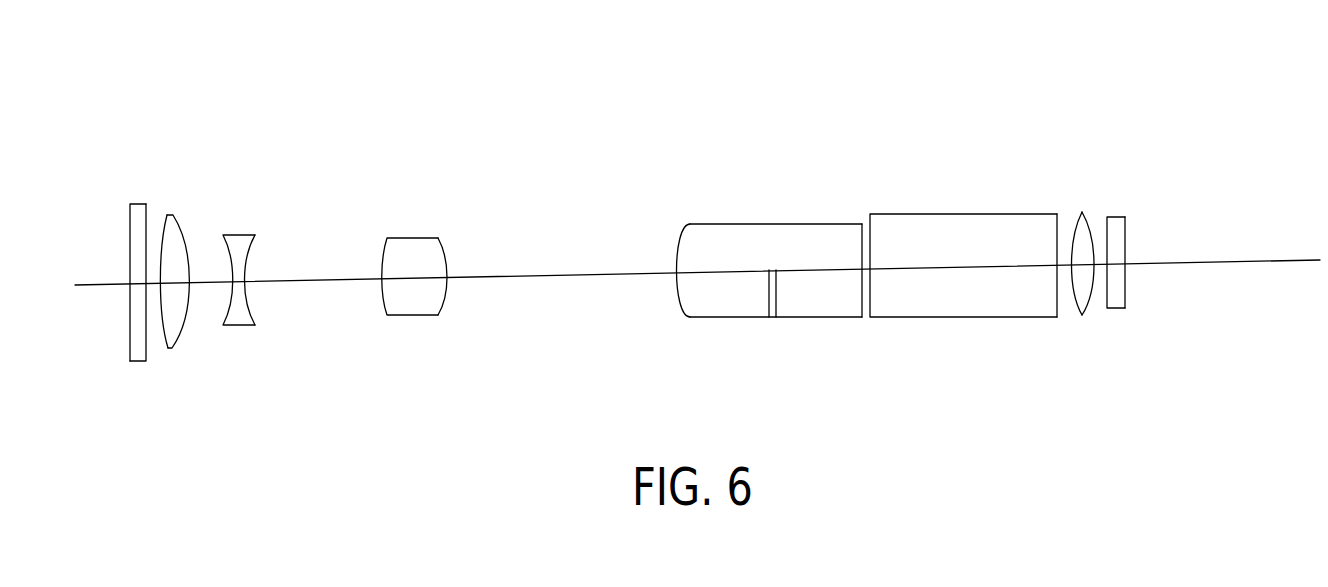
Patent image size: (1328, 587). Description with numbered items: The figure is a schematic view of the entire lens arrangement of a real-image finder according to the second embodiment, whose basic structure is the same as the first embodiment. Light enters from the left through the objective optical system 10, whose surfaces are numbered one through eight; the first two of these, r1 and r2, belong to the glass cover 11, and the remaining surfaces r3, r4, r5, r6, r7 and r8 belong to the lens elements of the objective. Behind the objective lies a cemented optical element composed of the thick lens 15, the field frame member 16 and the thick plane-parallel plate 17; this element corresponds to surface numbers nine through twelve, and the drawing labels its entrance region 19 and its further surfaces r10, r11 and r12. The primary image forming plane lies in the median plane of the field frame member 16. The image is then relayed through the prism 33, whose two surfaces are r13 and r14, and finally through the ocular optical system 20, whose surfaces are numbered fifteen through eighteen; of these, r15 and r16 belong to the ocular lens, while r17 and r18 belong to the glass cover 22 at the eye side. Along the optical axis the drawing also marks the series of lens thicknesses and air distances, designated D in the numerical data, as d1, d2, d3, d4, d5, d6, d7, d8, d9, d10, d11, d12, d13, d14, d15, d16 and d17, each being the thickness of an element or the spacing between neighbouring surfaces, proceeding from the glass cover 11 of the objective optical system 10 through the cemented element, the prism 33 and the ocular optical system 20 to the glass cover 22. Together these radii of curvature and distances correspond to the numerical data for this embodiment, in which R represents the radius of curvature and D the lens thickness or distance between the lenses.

The objective optical system 10 is at (440, 62).
The glass cover 11 is at (140, 116).
The thick lens 15 is at (703, 236).
The field frame member 16 is at (758, 318).
The thick plane-parallel plate 17 is at (803, 228).
The prism entrance surface 19 is at (685, 223).
The ocular optical system 20 is at (1215, 63).
The glass cover 22 is at (1210, 112).
The prism 33 is at (1030, 126).
The radius of curvature of surface No. 1 r1 is at (130, 204).
The radius of curvature of surface No. 2 r2 is at (146, 204).
The radius of curvature of surface No. 3 r3 is at (170, 215).
The radius of curvature of surface No. 4 r4 is at (175, 215).
The radius of curvature of surface No. 5 r5 is at (228, 235).
The radius of curvature of surface No. 6 r6 is at (255, 235).
The radius of curvature of surface No. 7 r7 is at (387, 238).
The radius of curvature of surface No. 8 r8 is at (437, 238).
The radius of curvature of surface No. 10 r10 is at (769, 317).
The radius of curvature of surface No. 11 r11 is at (776, 317).
The radius of curvature of surface No. 12 r12 is at (862, 224).
The radius of curvature of surface No. 13 r13 is at (871, 214).
The radius of curvature of surface No. 14 r14 is at (1055, 214).
The radius of curvature of surface No. 15 r15 is at (1078, 212).
The radius of curvature of surface No. 16 r16 is at (1087, 212).
The radius of curvature of surface No. 17 r17 is at (1107, 217).
The radius of curvature of surface No. 18 r18 is at (1125, 217).
The lens thickness or distance D1 d1 is at (140, 286).
The lens thickness or distance D2 d2 is at (150, 286).
The lens thickness or distance D3 d3 is at (178, 290).
The lens thickness or distance D4 d4 is at (213, 287).
The lens thickness or distance D5 d5 is at (247, 288).
The lens thickness or distance D6 d6 is at (313, 280).
The lens thickness or distance D7 d7 is at (413, 278).
The lens thickness or distance D8 d8 is at (555, 274).
The lens thickness or distance D9 d9 is at (722, 272).
The lens thickness or distance D10 d10 is at (773, 320).
The lens thickness or distance D11 d11 is at (820, 270).
The lens thickness or distance D12 d12 is at (866, 272).
The lens thickness or distance D13 d13 is at (965, 268).
The lens thickness or distance D14 d14 is at (1062, 267).
The lens thickness or distance D15 d15 is at (1088, 268).
The lens thickness or distance D16 d16 is at (1112, 266).
The lens thickness or distance D17 d17 is at (1120, 266).